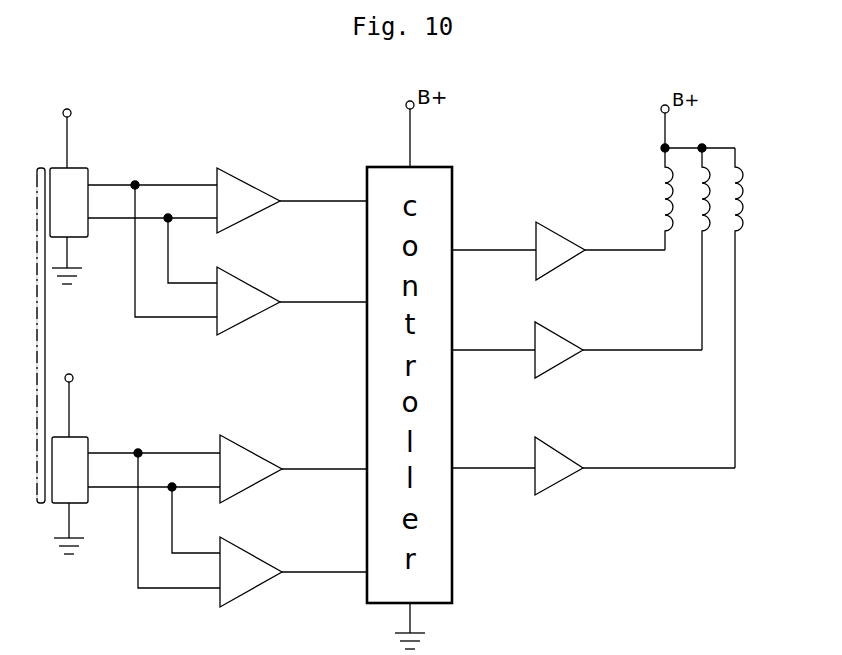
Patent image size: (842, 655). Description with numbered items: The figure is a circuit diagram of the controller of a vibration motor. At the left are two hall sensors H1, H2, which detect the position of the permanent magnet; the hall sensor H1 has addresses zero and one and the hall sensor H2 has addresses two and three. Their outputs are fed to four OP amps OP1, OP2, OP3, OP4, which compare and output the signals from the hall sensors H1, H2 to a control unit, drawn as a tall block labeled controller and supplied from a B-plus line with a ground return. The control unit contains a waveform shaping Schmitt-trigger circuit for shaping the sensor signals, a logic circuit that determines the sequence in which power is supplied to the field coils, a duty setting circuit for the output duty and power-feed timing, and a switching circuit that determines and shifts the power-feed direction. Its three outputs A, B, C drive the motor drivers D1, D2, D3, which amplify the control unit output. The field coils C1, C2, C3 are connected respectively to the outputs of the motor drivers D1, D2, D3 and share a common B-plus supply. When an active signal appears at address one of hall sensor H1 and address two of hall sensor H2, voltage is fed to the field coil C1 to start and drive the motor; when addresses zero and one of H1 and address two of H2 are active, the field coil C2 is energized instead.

The hall sensor H1 is at (74, 189).
The hall sensor H2 is at (76, 457).
The OP amp OP1 is at (292, 199).
The OP amp OP2 is at (292, 300).
The OP amp OP3 is at (293, 469).
The OP amp OP4 is at (293, 572).
The controller output A is at (494, 239).
The controller output B is at (493, 339).
The controller output C is at (493, 457).
The motor driver D1 is at (600, 246).
The motor driver D2 is at (618, 345).
The motor driver D3 is at (635, 463).
The field coil C1 is at (681, 201).
The field coil C2 is at (716, 249).
The field coil C3 is at (749, 308).